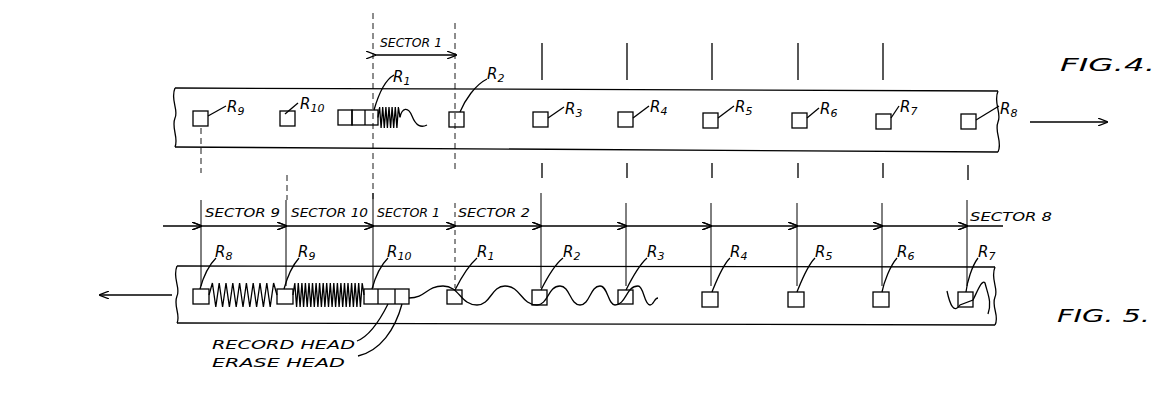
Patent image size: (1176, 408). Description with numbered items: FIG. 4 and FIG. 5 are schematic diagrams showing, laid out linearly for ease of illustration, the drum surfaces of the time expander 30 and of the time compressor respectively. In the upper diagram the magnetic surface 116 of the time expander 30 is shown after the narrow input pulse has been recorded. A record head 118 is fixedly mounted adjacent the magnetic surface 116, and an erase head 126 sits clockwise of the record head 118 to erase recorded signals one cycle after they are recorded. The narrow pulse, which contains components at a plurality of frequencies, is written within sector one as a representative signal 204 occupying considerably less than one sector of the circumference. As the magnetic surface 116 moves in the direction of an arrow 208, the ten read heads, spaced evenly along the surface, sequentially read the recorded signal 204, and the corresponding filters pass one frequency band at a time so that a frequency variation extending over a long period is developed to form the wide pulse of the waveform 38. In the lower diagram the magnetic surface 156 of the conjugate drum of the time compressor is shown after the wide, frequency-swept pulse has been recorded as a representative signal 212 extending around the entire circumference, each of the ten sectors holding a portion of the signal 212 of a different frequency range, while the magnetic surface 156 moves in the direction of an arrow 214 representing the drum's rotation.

In FIG. 4, the magnetic surface 116 is at (970, 98).
In FIG. 4, the record head 118 is at (357, 110).
In FIG. 4, the erase head 126 is at (342, 110).
In FIG. 4, the representative signal 204 is at (399, 128).
In FIG. 4, the waveform 38 is at (982, 0).
In FIG. 4, the time expander 30 is at (1096, 103).
In FIG. 4, the arrow 208 is at (1062, 124).
In FIG. 5, the magnetic surface 156 is at (983, 316).
In FIG. 5, the representative signal 212 is at (481, 302).
In FIG. 5, the arrow 214 is at (163, 281).